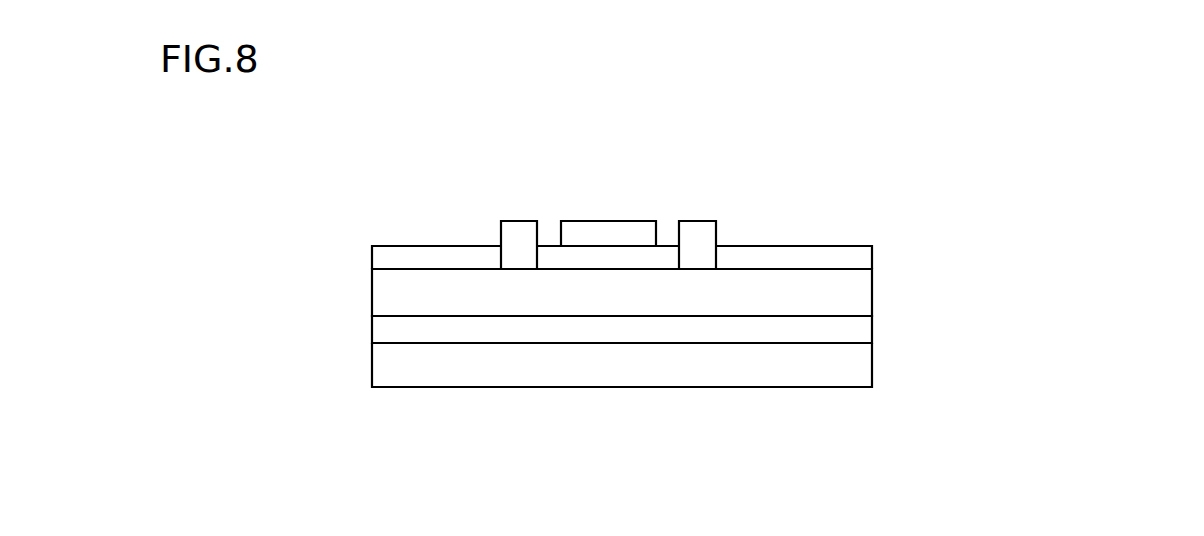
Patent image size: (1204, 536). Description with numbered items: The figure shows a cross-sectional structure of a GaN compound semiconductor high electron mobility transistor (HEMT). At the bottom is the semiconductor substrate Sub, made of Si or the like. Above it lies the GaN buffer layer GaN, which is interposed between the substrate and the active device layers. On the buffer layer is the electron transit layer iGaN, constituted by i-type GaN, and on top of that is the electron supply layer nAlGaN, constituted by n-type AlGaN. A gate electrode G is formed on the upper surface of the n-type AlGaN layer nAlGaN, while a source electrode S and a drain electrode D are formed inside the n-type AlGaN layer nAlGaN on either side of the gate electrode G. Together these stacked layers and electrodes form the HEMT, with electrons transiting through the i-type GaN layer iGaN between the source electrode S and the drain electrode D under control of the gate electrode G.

The source electrode S is at (519, 228).
The gate electrode G is at (608, 217).
The drain electrode D is at (697, 228).
The n-type AlGaN layer nAlGaN is at (872, 257).
The i-type GaN layer iGaN is at (872, 294).
The GaN buffer layer GaN is at (872, 326).
The semiconductor substrate Sub is at (810, 387).